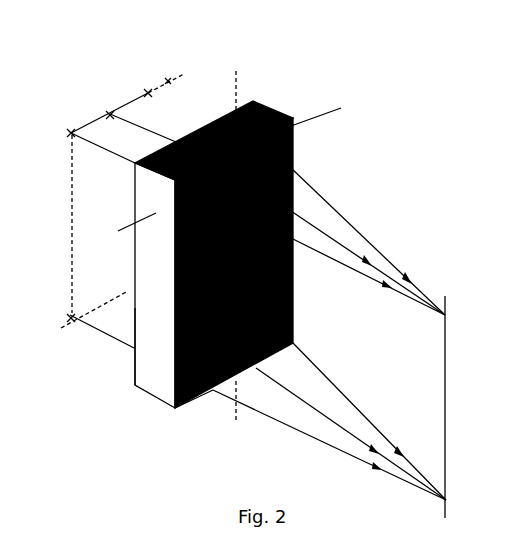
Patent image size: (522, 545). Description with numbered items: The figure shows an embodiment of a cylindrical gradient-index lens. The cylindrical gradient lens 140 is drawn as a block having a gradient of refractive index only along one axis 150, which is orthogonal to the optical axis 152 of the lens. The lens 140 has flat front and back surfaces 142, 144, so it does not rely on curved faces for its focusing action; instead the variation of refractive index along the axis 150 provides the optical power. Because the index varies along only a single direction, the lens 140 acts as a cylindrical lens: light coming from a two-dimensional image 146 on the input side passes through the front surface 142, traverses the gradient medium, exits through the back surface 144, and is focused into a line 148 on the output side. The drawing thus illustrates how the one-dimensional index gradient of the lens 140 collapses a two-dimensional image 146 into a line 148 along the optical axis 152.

The cylindrical gradient lens 140 is at (287, 146).
The front surface 142 is at (127, 357).
The back surface 144 is at (183, 392).
The two-dimensional image 146 is at (113, 194).
The line 148 is at (440, 326).
The axis 150 is at (118, 218).
The optical axis 152 is at (118, 113).